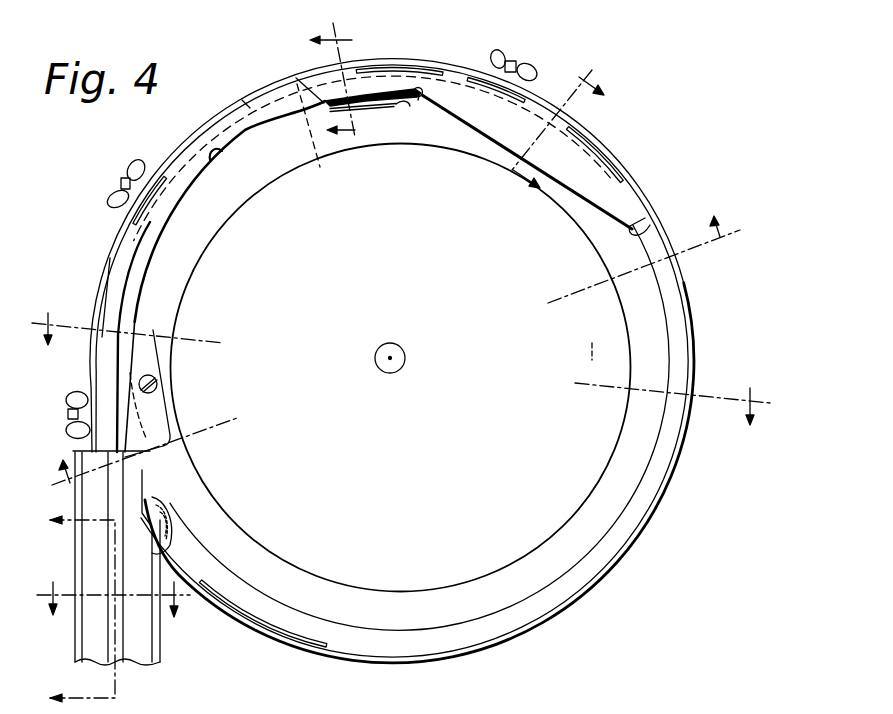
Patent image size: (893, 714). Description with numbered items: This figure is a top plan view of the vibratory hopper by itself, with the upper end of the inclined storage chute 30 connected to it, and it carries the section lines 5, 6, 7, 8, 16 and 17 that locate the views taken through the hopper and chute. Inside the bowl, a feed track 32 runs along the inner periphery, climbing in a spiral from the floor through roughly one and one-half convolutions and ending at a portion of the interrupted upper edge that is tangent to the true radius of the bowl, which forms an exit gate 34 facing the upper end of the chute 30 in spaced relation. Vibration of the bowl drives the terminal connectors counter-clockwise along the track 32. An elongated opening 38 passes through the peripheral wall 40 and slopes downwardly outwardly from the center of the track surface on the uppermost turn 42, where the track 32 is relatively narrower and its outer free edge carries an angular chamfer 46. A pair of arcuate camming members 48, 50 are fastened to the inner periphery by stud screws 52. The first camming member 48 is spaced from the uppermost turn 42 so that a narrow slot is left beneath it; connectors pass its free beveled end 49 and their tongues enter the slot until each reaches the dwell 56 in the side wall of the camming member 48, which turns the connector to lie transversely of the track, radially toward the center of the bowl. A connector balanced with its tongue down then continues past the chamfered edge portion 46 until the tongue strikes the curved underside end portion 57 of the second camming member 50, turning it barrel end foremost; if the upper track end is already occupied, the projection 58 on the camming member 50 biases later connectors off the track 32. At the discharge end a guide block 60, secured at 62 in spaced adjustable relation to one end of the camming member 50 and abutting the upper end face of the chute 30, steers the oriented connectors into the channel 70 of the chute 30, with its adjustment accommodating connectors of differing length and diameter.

The inclined chute 30 is at (82, 645).
The feed track 32 is at (600, 310).
The exit gate 34 is at (92, 443).
The elongated opening 38 is at (394, 100).
The peripheral wall 40 is at (690, 343).
The uppermost turn 42 is at (423, 108).
The chamfer 46 is at (406, 108).
The first camming member 48 is at (563, 148).
The beveled end 49 is at (645, 227).
The second camming member 50 is at (248, 106).
The stud screws 52 is at (517, 62).
The dwell 56 is at (430, 93).
The curved underside end portion 57 is at (312, 140).
The projection 58 is at (222, 158).
The guide block 60 is at (160, 407).
The securing means 62 is at (158, 382).
The channel 70 is at (117, 487).
The section line 5- 5 is at (552, 124).
The section line 6- 6 is at (338, 84).
The section line 7- 7 is at (113, 598).
The section line 8- 8 is at (74, 610).
The section line 16- 16 is at (402, 365).
The section line 17- 17 is at (398, 360).